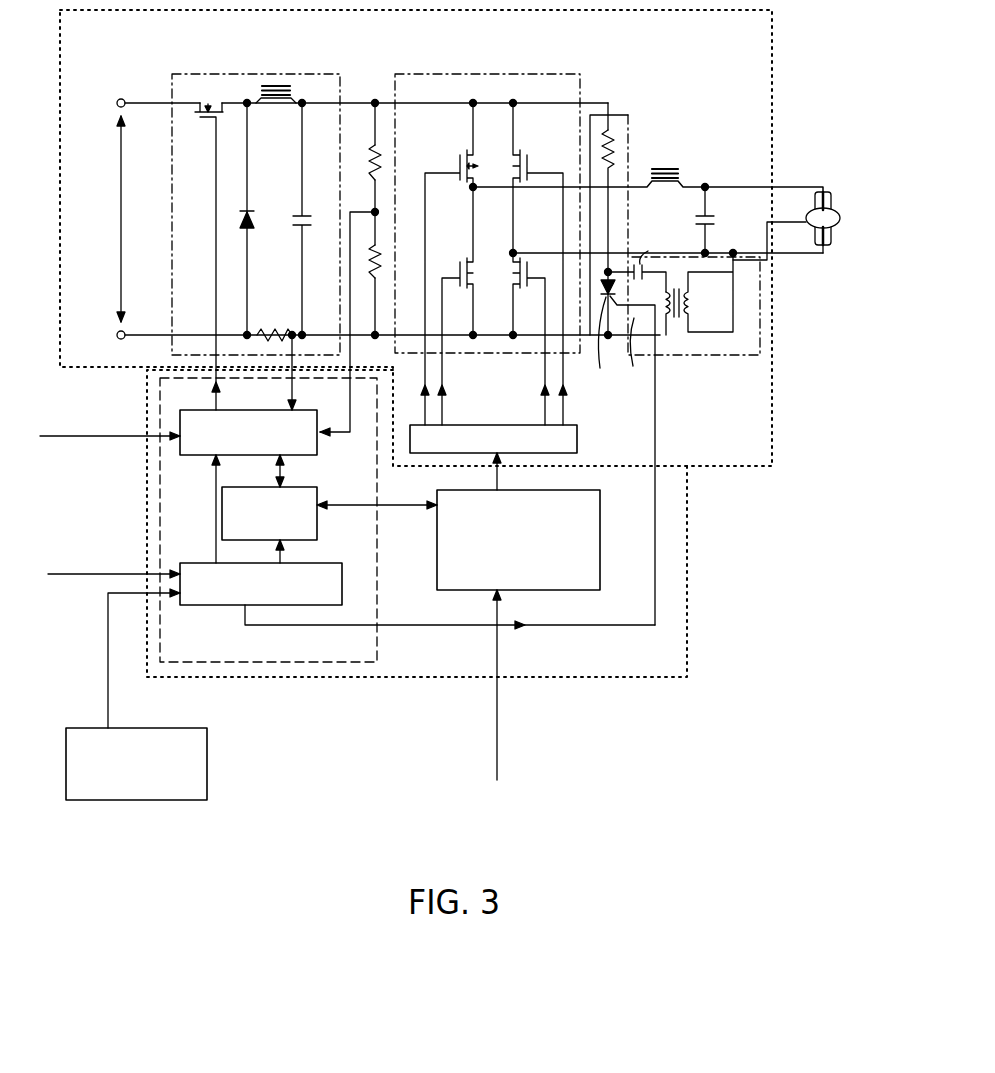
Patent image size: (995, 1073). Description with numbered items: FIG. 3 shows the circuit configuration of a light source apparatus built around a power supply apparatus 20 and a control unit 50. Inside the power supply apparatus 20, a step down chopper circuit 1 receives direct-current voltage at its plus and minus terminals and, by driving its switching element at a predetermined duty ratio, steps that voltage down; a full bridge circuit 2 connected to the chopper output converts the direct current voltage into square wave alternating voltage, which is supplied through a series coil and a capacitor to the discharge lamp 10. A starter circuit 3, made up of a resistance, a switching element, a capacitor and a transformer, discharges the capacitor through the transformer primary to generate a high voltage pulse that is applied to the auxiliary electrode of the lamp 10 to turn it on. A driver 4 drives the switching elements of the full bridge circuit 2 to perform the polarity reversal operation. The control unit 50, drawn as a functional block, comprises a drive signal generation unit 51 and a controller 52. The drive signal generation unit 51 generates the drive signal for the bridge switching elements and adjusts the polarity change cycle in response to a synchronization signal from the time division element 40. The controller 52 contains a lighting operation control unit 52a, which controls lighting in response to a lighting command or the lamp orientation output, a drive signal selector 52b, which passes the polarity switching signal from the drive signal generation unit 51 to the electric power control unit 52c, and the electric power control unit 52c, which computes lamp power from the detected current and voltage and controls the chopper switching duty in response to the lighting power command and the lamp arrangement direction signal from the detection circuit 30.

The step down chopper circuit 1 is at (256, 73).
The full bridge circuit 2 is at (543, 73).
The starter circuit 3 is at (745, 318).
The driver 4 is at (578, 437).
The discharge lamp 10 is at (826, 254).
The power supply apparatus 20 is at (773, 55).
The detection circuit 30 is at (208, 752).
The time division element 40 is at (518, 695).
The control unit 50 is at (687, 515).
The drive signal generation unit 51 is at (578, 490).
The controller 52 is at (197, 665).
The lighting operation control unit 52a is at (342, 570).
The drive signal selector 52b is at (319, 512).
The electric power control unit 52c is at (206, 410).